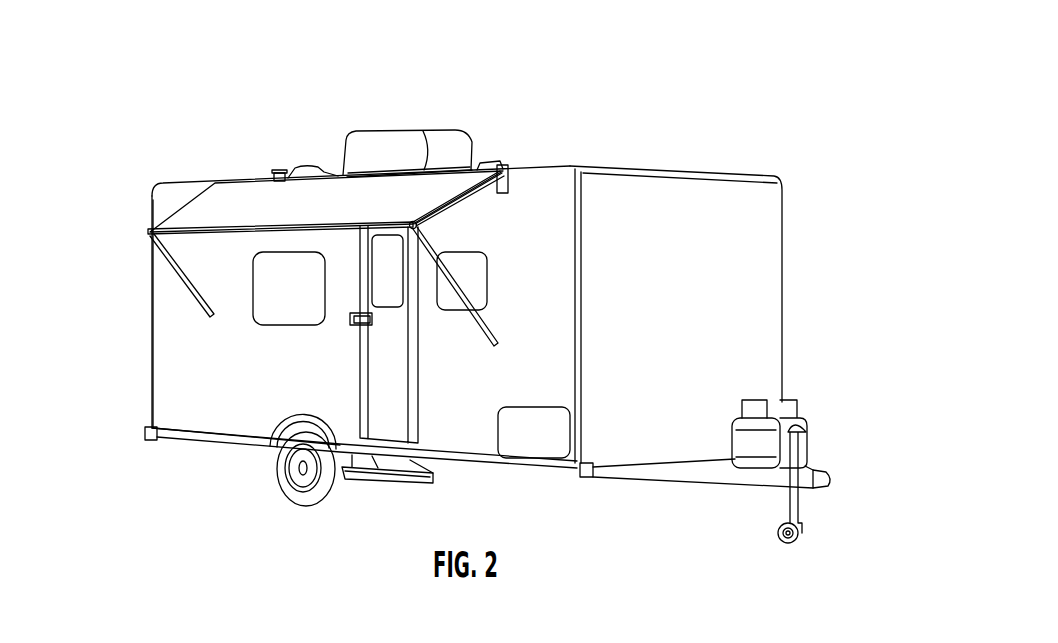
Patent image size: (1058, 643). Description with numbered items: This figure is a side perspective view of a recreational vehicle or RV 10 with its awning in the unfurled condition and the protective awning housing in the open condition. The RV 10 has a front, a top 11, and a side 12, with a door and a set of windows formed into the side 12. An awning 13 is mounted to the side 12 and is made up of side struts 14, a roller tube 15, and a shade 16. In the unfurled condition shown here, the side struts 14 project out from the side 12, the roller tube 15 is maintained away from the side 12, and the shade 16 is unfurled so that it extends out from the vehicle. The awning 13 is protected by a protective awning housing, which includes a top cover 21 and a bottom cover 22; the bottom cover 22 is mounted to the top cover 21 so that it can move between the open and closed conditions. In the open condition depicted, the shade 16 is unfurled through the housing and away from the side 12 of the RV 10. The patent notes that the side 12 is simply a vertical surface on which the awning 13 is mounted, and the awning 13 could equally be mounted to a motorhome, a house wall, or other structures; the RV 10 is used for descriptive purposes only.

The recreational vehicle 10 is at (824, 134).
The top 11 is at (645, 166).
The side 12 is at (173, 394).
The awning 13 is at (221, 197).
The side struts 14 is at (182, 282).
The roller tube 15 is at (420, 228).
The shade 16 is at (260, 200).
The top cover 21 is at (508, 168).
The bottom cover 22 is at (510, 190).